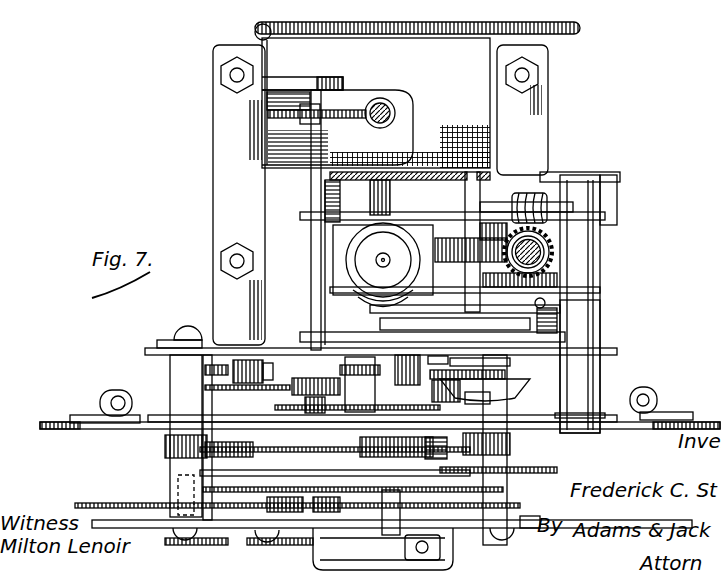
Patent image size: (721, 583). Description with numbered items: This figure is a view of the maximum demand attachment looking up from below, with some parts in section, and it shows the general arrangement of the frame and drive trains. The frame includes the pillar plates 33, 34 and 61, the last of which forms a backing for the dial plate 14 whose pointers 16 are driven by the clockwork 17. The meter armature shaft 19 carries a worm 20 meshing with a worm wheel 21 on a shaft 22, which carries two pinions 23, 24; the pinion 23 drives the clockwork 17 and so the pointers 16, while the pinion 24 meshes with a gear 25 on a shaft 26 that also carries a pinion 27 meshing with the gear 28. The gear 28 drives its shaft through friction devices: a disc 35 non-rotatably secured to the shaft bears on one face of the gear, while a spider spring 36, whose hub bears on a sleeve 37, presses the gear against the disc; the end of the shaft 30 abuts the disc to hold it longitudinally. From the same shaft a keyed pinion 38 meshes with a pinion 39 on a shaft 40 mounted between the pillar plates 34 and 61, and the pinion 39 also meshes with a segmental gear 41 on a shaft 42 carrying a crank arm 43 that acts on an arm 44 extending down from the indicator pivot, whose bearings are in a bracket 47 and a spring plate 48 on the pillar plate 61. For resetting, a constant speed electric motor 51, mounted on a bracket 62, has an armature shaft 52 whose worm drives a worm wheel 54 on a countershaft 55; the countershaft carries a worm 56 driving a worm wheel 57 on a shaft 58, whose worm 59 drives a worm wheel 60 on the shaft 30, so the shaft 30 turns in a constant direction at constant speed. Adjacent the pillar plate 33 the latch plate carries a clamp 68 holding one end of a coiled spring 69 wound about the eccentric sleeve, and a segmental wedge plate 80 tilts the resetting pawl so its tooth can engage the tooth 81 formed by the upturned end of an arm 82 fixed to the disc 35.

The dial plate 14 is at (233, 528).
The pointer 16 is at (500, 540).
The clockwork 17 is at (526, 450).
The shaft 19 is at (397, 112).
The worm 20 is at (385, 98).
The worm wheel 21 is at (348, 110).
The shaft 22 is at (311, 238).
The pinion 23 is at (256, 374).
The pinion 24 is at (312, 413).
The gear 25 is at (288, 410).
The shaft 26 is at (350, 364).
The pinion 27 is at (344, 390).
The gear 28 is at (600, 377).
The shaft 30 is at (512, 175).
The pillar plate 33 is at (617, 346).
The pillar plate 34 is at (608, 415).
The disc 35 is at (505, 374).
The spring 36 is at (520, 393).
The sleeve 37 is at (490, 405).
The pinion 38 is at (512, 445).
The pinion 39 is at (447, 400).
The shaft 40 is at (445, 495).
The segmental gear 41 is at (365, 452).
The shaft 42 is at (430, 455).
The crank arm 43 is at (320, 533).
The arm 44 is at (375, 512).
The bracket 47 is at (530, 540).
The spring plate 48 is at (380, 537).
The constant speed electric motor 51 is at (352, 294).
The armature shaft 52 is at (553, 174).
The worm wheel 54 is at (346, 199).
The countershaft 55 is at (415, 205).
The worm 56 is at (530, 193).
The worm wheel 57 is at (545, 247).
The shaft 58 is at (553, 252).
The worm 59 is at (553, 260).
The worm wheel 60 is at (440, 238).
The pillar plate 61 is at (105, 497).
The bracket 62 is at (548, 57).
The clamp 68 is at (560, 315).
The coiled spring 69 is at (548, 301).
The wedge plate 80 is at (563, 332).
The tooth 81 is at (430, 360).
The arm 82 is at (465, 361).